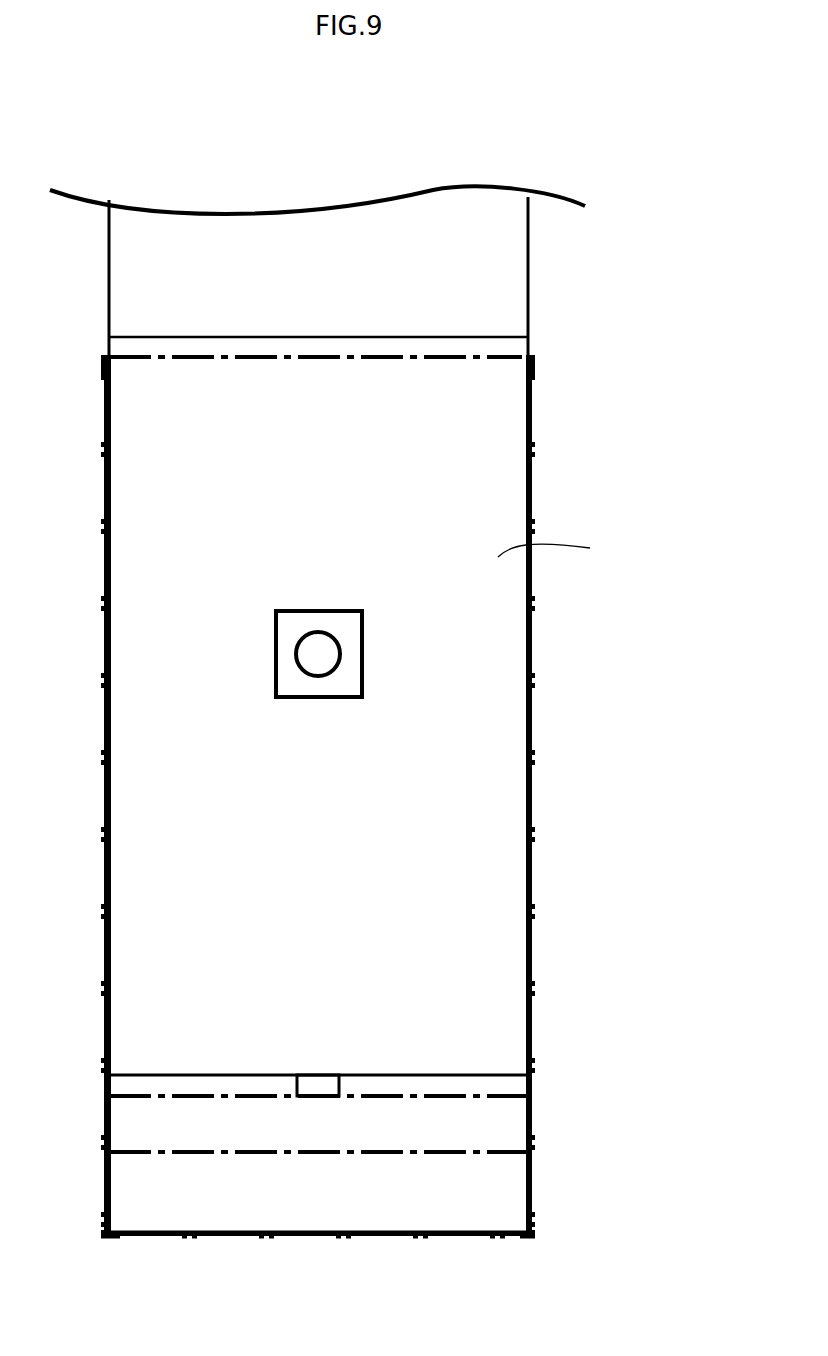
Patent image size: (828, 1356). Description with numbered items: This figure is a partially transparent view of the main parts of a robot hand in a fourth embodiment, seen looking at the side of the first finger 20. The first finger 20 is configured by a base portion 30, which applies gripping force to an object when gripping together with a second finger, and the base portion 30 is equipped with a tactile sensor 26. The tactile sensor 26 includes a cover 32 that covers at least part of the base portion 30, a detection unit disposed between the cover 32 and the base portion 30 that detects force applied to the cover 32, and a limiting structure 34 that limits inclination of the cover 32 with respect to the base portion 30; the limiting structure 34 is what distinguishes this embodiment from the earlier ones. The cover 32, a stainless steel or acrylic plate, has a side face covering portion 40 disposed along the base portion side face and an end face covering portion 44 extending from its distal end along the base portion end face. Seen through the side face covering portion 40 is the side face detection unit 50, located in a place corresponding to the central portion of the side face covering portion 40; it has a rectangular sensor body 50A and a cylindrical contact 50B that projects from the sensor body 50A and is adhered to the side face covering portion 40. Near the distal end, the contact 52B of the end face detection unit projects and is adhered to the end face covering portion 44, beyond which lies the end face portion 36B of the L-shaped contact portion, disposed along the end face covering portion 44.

The first finger 20 is at (503, 172).
The base portion 30 is at (508, 250).
The limiting structure 34 is at (497, 346).
The tactile sensor 26 is at (603, 340).
The cover 32 is at (535, 478).
The side face covering portion 40 is at (563, 549).
The side face detection unit 50 is at (476, 650).
The sensor body 50A is at (350, 625).
The contact 50B is at (326, 653).
The contact 52B is at (322, 1085).
The end face covering portion 44 is at (357, 1128).
The end face portion 36B is at (462, 1202).